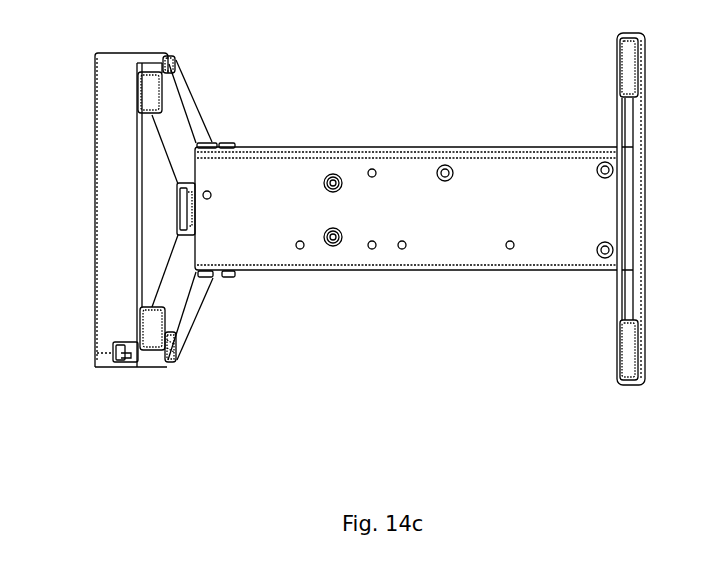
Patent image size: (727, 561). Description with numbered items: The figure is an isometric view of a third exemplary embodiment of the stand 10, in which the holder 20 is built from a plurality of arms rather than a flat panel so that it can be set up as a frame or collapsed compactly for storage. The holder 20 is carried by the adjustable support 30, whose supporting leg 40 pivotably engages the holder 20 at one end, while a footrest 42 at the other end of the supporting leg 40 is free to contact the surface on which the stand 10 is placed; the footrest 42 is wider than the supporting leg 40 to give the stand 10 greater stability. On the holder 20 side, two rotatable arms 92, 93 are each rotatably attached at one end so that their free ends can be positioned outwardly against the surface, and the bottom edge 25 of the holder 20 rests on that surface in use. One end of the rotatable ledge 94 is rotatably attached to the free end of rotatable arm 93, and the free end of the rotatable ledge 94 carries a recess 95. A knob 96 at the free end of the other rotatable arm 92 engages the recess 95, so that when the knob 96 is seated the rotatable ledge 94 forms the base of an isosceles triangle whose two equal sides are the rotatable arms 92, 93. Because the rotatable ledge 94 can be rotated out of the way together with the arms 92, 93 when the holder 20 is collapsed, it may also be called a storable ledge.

The stand 10 is at (490, 108).
The holder 20 is at (204, 93).
The bottom edge 25 is at (110, 150).
The adjustable support 30 is at (423, 289).
The supporting leg 40 is at (403, 172).
The footrest 42 is at (640, 135).
The rotatable arm 92 is at (190, 312).
The rotatable arm 93 is at (180, 89).
The rotatable ledge 94 is at (108, 203).
The recess 95 is at (127, 342).
The knob 96 is at (129, 360).